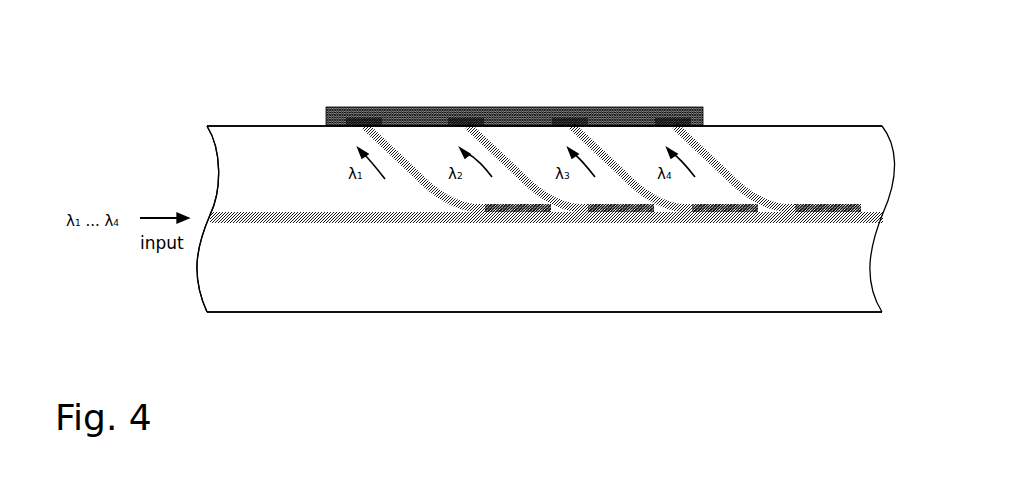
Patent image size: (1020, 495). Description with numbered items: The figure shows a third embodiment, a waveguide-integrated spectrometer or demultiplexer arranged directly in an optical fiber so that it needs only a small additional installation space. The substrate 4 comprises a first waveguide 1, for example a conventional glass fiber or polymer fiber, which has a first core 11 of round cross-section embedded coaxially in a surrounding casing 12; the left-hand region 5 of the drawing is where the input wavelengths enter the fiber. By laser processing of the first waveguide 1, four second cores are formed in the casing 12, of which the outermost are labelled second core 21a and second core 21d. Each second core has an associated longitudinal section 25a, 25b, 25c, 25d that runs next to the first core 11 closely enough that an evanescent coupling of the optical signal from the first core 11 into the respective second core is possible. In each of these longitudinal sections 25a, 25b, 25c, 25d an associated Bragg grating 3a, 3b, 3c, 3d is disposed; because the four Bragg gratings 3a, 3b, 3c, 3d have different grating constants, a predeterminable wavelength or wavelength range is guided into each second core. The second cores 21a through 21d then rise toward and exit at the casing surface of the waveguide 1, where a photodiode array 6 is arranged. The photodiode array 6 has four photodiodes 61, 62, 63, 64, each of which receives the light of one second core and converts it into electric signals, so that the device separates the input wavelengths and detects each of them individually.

The first waveguide 1 is at (284, 118).
The substrate 4 is at (832, 138).
The optical waveguide substrate 5 is at (200, 152).
The photodiode array 6 is at (515, 108).
The photodiode 61 is at (369, 124).
The photodiode 62 is at (457, 122).
The photodiode 63 is at (562, 122).
The photodiode 64 is at (670, 122).
The first core 11 is at (307, 225).
The casing 12 is at (793, 307).
The second core 21a is at (409, 173).
The second core 21d is at (733, 183).
The Bragg grating 3a is at (535, 210).
The Bragg grating 3b is at (640, 210).
The Bragg grating 3c is at (748, 210).
The Bragg grating 3d is at (850, 210).
The longitudinal section 25a is at (487, 214).
The longitudinal section 25b is at (597, 214).
The longitudinal section 25c is at (702, 214).
The longitudinal section 25d is at (802, 214).